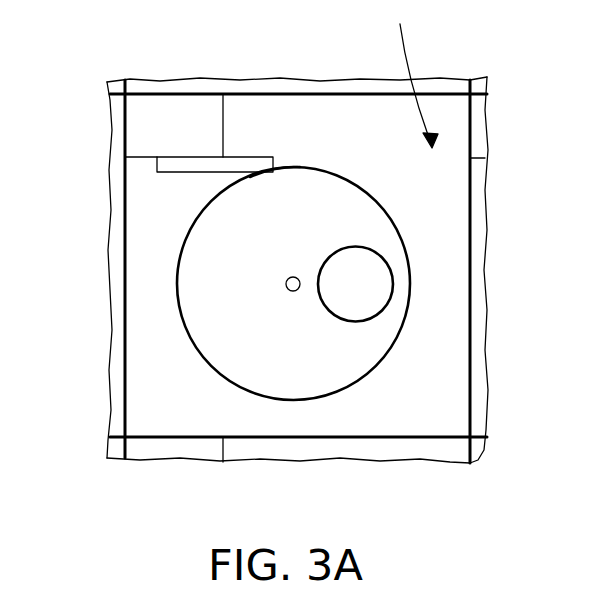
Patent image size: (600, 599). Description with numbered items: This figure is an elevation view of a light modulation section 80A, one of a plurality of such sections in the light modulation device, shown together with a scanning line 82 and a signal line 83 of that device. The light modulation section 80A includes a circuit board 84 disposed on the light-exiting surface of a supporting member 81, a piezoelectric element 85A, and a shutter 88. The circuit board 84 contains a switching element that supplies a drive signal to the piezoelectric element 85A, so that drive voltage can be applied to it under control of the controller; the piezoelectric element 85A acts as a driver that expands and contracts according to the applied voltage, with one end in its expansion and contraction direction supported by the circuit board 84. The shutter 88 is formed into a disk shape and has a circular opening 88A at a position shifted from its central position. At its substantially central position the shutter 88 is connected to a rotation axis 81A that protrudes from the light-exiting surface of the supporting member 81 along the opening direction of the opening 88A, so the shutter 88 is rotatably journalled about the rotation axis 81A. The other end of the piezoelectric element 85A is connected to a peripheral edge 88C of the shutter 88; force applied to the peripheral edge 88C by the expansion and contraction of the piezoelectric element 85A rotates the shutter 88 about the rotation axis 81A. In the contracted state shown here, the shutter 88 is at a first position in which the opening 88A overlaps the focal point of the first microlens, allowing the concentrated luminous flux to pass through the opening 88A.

The light modulation section 80A is at (407, 74).
The supporting member 81 is at (110, 325).
The rotation axis 81A is at (298, 291).
The scanning line 82 is at (175, 442).
The signal line 83 is at (125, 398).
The circuit board 84 is at (177, 125).
The piezoelectric element 85A is at (238, 165).
The shutter 88 is at (375, 222).
The opening 88A is at (378, 277).
The peripheral edge 88C is at (273, 172).